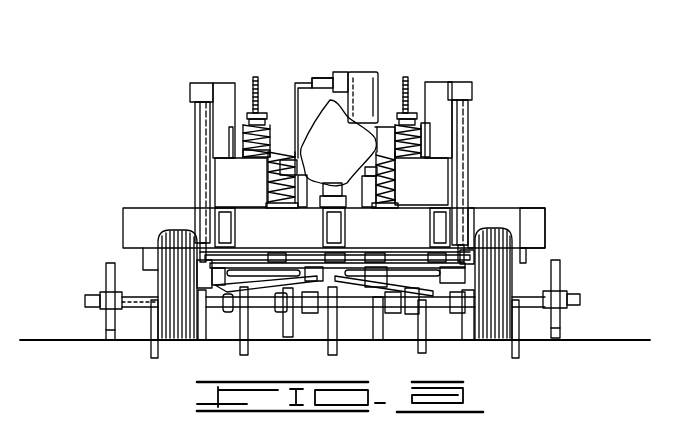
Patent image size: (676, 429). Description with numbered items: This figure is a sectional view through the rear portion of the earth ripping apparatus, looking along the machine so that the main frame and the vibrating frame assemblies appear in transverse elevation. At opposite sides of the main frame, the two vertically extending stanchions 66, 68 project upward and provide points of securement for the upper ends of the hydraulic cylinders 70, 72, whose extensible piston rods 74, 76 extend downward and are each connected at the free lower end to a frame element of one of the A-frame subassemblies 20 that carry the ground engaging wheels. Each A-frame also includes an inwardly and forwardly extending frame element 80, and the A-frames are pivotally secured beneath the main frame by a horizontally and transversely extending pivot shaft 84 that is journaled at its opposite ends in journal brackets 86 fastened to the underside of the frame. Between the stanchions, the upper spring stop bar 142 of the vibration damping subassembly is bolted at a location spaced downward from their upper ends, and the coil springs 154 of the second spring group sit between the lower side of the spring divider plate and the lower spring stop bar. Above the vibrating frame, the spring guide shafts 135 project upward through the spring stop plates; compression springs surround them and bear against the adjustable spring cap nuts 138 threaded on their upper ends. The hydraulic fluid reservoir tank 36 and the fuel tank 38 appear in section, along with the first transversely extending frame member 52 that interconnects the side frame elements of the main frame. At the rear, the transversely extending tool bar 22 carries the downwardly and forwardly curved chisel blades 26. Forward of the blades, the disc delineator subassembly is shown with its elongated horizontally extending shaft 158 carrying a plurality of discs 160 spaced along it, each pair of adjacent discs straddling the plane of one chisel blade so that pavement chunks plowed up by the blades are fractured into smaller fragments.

The A-frame subassembly 20 is at (428, 292).
The tool bar 22 is at (136, 231).
The chisel blade 26 is at (152, 354).
The hydraulic fluid reservoir tank 36 is at (430, 187).
The fuel tank 38 is at (245, 189).
The first transversely extending frame member 52 is at (280, 232).
The stanchion 66 is at (220, 90).
The stanchion 68 is at (436, 82).
The hydraulic cylinder 70 is at (194, 131).
The hydraulic cylinder 72 is at (463, 119).
The piston rod 74 is at (198, 244).
The piston rod 76 is at (470, 244).
The inwardly and forwardly extending frame element 80 is at (227, 313).
The pivot shaft 84 is at (269, 278).
The journal bracket 86 is at (515, 231).
The spring guide shaft 135 is at (259, 75).
The adjustable spring cap nut 138 is at (393, 124).
The upper spring stop bar 142 is at (285, 103).
The coil springs 154 is at (403, 246).
The shaft 158 is at (87, 297).
The disc 160 is at (105, 321).